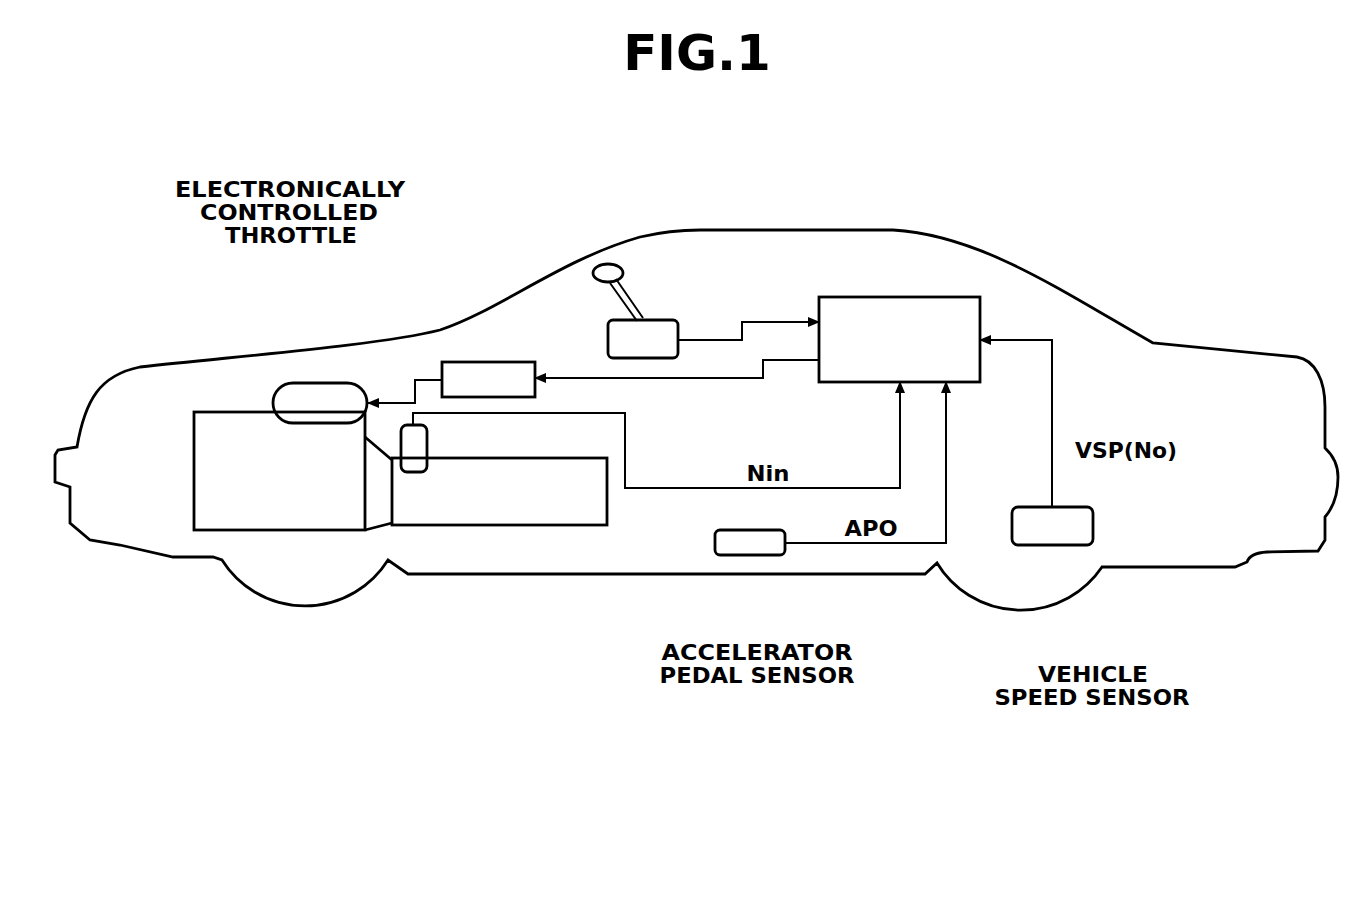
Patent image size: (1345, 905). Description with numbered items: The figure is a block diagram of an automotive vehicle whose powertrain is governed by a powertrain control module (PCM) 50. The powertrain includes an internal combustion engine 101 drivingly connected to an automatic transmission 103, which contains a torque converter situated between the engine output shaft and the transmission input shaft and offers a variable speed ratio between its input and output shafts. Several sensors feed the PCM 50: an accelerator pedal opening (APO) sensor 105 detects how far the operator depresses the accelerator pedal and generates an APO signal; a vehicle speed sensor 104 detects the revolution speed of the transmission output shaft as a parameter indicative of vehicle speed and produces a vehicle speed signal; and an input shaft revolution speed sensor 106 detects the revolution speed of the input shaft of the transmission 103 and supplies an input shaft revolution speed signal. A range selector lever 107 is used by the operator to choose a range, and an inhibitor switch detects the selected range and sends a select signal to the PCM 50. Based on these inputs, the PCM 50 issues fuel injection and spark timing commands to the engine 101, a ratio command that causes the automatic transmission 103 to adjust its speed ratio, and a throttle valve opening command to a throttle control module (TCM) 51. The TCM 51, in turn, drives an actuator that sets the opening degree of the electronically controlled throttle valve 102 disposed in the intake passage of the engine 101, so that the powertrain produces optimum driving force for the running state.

The powertrain control module (PCM) 50 is at (887, 297).
The throttle control module (TCM) 51 is at (500, 362).
The internal combustion engine 101 is at (222, 533).
The electronically controlled throttle valve 102 is at (318, 398).
The automatic transmission 103 is at (525, 527).
The vehicle speed sensor 104 is at (1047, 536).
The accelerator pedal opening (APO) sensor 105 is at (751, 556).
The input shaft revolution speed sensor 106 is at (408, 433).
The range selector lever 107 is at (605, 267).